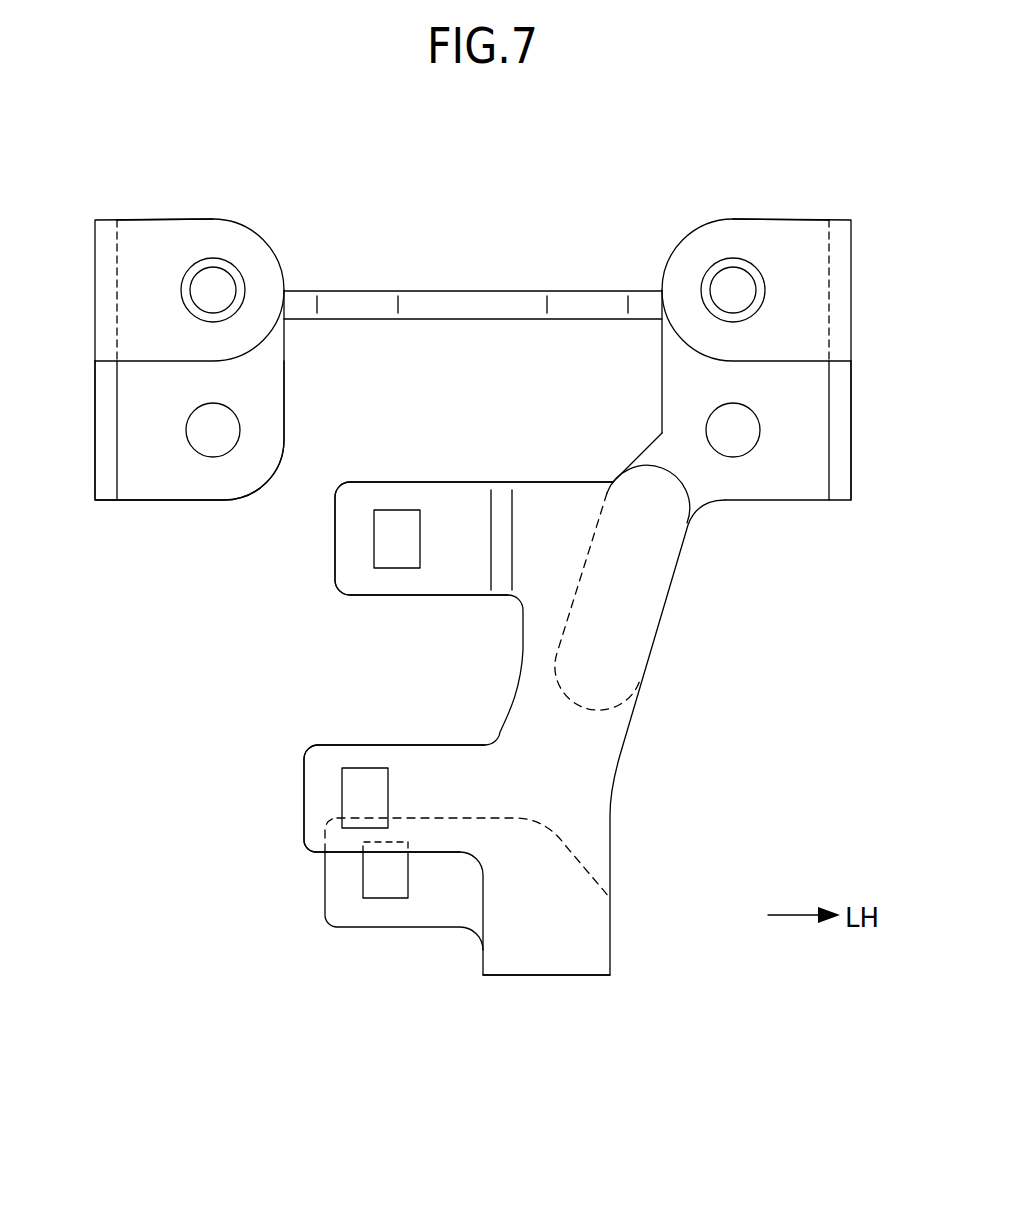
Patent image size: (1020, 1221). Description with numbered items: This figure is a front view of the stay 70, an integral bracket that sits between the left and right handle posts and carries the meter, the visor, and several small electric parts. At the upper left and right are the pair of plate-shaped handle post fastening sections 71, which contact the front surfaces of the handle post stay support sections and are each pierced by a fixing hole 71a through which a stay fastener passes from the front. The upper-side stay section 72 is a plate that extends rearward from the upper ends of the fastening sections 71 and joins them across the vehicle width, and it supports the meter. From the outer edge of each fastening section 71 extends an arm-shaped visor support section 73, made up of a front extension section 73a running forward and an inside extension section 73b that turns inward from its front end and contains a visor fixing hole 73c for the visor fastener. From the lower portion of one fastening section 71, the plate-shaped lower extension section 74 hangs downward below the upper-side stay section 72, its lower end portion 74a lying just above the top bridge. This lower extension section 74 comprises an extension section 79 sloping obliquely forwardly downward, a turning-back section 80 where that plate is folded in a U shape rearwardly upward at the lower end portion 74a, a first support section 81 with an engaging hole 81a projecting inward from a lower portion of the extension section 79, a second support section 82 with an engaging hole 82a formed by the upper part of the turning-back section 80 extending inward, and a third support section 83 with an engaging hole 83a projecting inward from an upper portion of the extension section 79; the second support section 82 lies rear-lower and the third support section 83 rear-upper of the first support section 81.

The stay 70 is at (492, 161).
The handle post fastening section 71 is at (168, 480).
The fixing hole 71a is at (213, 465).
The upper-side stay section 72 is at (490, 291).
The visor support section 73 is at (163, 220).
The front extension section 73a is at (95, 332).
The inside extension section 73b is at (140, 245).
The visor fixing hole 73c is at (228, 278).
The lower extension section 74 is at (616, 810).
The lower end portion 74a is at (545, 977).
The extension section 79 is at (585, 748).
The turning-back section 80 is at (563, 848).
The first support section 81 is at (304, 800).
The engaging hole 81a is at (360, 778).
The second support section 82 is at (325, 893).
The engaging hole 82a is at (372, 880).
The third support section 83 is at (335, 565).
The engaging hole 83a is at (385, 553).